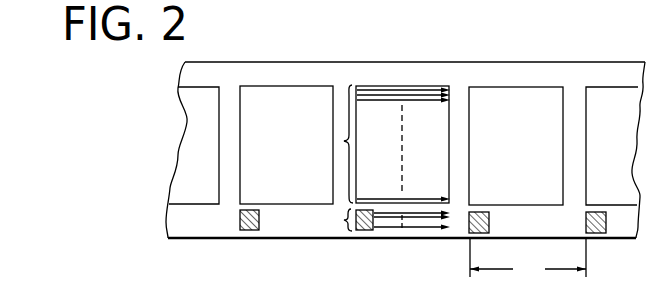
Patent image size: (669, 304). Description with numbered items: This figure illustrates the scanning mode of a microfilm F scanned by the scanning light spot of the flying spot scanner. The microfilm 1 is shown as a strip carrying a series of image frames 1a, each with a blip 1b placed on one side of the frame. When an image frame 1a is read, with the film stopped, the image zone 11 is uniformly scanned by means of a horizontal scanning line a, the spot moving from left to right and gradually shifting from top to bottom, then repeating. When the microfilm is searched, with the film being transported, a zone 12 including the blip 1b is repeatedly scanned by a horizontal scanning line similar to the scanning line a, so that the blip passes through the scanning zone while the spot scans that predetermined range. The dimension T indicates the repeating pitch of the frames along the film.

The tape carrier 1 is at (573, 80).
The image frame 1a is at (438, 118).
The blip 1b is at (351, 232).
The image zone 11 is at (341, 141).
The zone including a blip 12 is at (381, 221).
The horizontal scanning line a is at (388, 88).
The pitch T is at (528, 261).